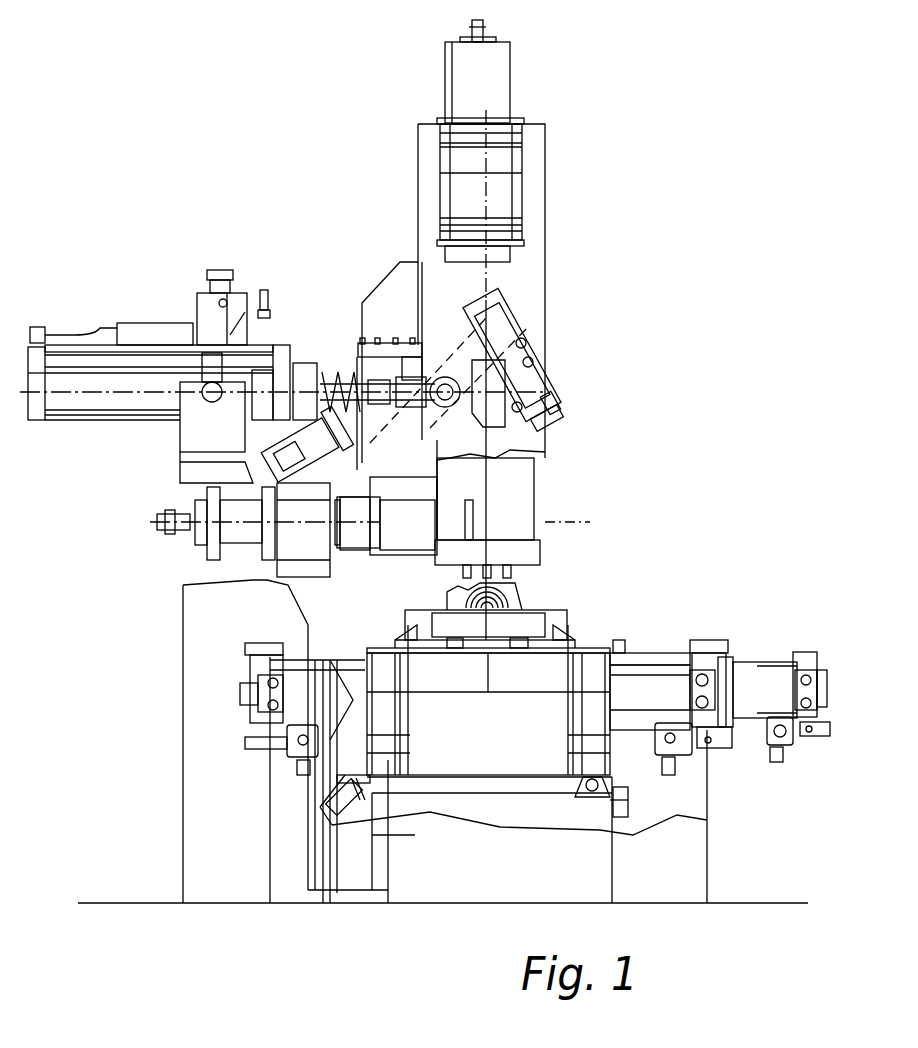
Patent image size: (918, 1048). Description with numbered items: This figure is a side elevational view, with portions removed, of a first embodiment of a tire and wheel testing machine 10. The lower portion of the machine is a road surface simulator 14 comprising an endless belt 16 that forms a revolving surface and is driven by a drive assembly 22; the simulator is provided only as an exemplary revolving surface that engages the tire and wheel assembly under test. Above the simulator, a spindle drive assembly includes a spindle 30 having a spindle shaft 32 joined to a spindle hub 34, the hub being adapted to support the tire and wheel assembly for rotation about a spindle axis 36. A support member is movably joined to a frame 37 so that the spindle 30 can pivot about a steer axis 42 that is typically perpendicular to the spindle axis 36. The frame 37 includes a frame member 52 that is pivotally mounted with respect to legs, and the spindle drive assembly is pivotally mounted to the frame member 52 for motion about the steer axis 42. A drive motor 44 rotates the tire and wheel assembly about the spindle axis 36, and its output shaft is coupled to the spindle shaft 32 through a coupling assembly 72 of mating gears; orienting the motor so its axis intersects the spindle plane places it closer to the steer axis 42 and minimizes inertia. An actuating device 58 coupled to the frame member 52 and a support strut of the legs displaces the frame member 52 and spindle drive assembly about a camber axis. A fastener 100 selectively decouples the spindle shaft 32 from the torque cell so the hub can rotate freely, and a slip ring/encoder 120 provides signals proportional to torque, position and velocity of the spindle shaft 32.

The tire and wheel testing machine 10 is at (112, 158).
The road surface simulator 14 is at (633, 622).
The endless belt 16 is at (553, 613).
The drive assembly 22 is at (738, 632).
The spindle 30 is at (473, 490).
The spindle shaft 32 is at (398, 528).
The spindle hub 34 is at (477, 520).
The spindle axis 36 is at (568, 523).
The frame 37 is at (298, 232).
The steer axis 42 is at (482, 271).
The drive motor 44 is at (535, 324).
The frame member 52 is at (546, 178).
The actuating device 58 is at (47, 316).
The coupling assembly 72 is at (178, 548).
The fastener 100 is at (190, 503).
The slip ring/encoder 120 is at (160, 520).